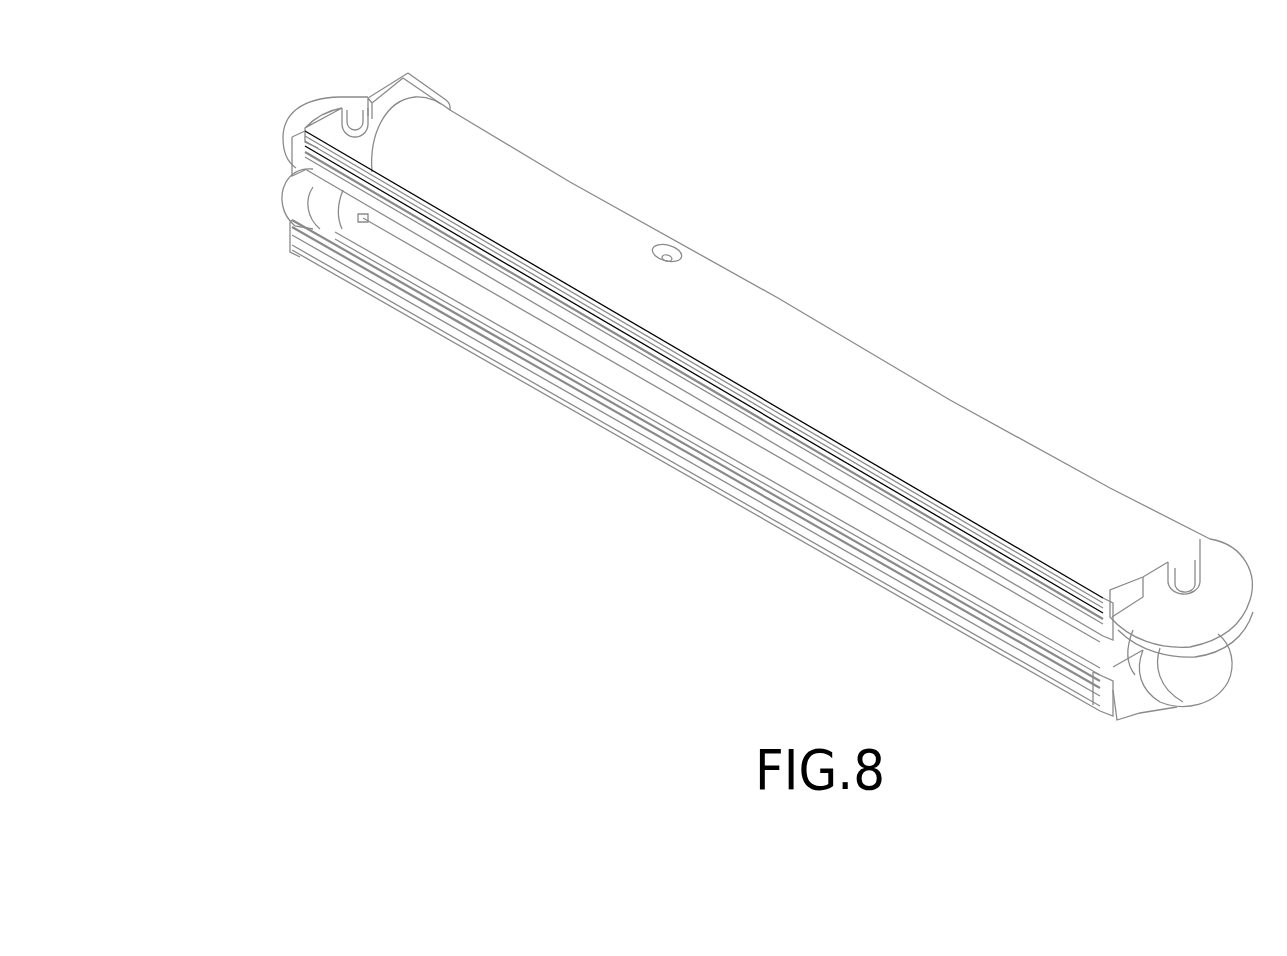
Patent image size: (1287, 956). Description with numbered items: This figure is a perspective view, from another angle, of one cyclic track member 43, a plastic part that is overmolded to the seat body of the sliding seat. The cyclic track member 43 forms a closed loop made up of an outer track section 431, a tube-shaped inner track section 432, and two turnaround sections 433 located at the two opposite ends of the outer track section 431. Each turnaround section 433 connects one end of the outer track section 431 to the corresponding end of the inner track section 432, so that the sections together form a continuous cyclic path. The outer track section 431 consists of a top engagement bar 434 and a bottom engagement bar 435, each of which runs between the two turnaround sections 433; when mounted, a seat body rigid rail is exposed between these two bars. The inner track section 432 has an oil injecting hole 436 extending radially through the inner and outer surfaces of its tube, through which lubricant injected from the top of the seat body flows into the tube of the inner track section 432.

The cyclic track member 43 is at (534, 469).
The outer track section 431 is at (458, 250).
The inner track section 432 is at (828, 350).
The turnaround section 433 is at (303, 212).
The top engagement bar 434 is at (704, 385).
The bottom engagement bar 435 is at (476, 338).
The oil injecting hole 436 is at (667, 257).